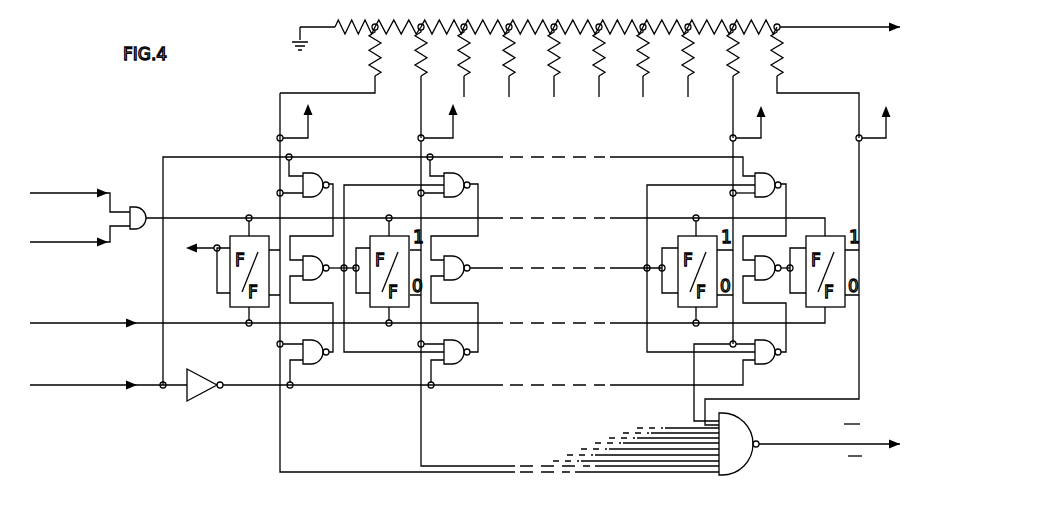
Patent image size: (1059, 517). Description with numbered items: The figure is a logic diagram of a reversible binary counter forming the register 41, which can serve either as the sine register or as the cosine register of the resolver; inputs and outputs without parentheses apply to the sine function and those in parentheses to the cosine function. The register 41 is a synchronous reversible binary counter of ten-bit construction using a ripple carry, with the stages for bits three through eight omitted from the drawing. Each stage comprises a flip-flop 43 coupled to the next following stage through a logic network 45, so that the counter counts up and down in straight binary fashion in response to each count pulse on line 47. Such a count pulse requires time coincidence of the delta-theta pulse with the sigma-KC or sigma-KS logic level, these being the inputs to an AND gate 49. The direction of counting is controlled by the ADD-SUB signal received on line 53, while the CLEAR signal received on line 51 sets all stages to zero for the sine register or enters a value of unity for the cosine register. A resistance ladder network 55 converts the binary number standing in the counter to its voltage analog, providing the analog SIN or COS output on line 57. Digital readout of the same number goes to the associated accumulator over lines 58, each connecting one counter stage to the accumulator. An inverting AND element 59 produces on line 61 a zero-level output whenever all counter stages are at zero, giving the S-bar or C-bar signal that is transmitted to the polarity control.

The register 41 is at (240, 407).
The flip-flop 43 is at (230, 303).
The logic network 45 is at (326, 367).
The count pulse line 47 is at (212, 218).
The AND gate 49 is at (147, 206).
The CLEAR input line 51 is at (155, 320).
The ADD-SUB signal input line 53 is at (156, 384).
The resistance ladder network 55 is at (352, 60).
The analog output line 57 is at (790, 31).
The digital readout lines 58 is at (310, 131).
The inverting AND element 59 is at (741, 467).
The zero-indication output line 61 is at (783, 447).